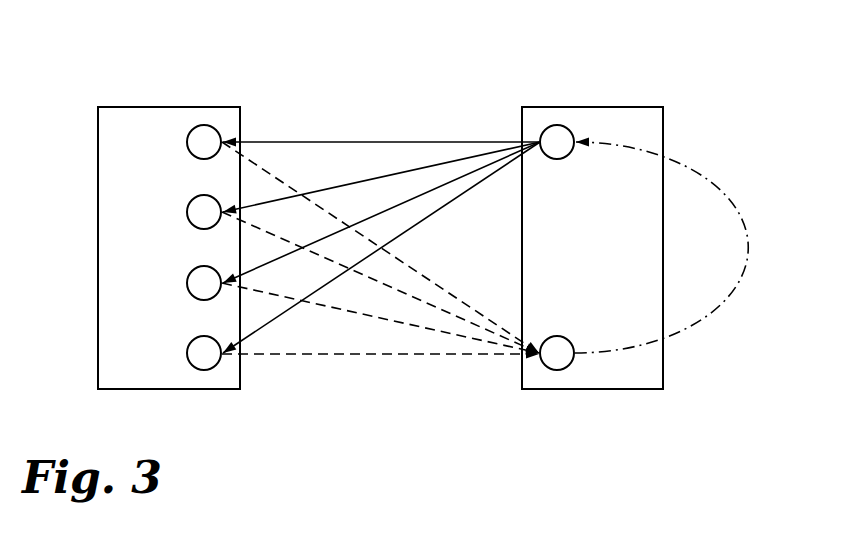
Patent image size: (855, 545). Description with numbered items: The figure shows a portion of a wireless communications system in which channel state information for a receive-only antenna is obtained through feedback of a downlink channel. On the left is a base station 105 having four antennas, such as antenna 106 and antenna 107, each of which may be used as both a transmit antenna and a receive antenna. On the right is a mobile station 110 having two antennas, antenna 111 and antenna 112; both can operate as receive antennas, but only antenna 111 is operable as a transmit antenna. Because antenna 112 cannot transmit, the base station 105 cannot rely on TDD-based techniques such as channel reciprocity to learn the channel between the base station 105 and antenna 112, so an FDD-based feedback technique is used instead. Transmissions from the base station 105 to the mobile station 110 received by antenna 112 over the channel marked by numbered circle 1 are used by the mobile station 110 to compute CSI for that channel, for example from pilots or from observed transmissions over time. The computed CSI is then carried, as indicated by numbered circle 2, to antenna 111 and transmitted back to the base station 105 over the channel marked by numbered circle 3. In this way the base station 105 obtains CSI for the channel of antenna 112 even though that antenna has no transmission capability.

The base station 105 is at (98, 140).
The antenna 106 is at (201, 125).
The antenna 107 is at (201, 195).
The mobile station 110 is at (663, 140).
The antenna 111 is at (559, 125).
The antenna 112 is at (556, 370).
The numbered circle 1 is at (380, 283).
The numbered circle 2 is at (698, 247).
The numbered circle 3 is at (381, 212).